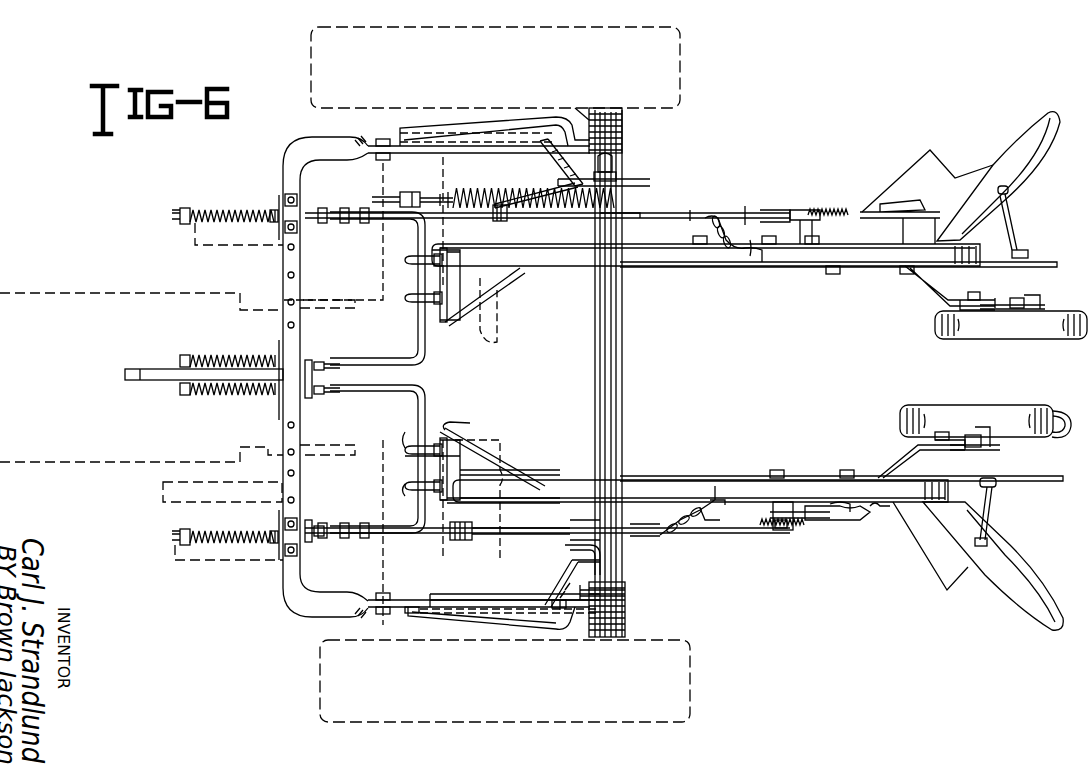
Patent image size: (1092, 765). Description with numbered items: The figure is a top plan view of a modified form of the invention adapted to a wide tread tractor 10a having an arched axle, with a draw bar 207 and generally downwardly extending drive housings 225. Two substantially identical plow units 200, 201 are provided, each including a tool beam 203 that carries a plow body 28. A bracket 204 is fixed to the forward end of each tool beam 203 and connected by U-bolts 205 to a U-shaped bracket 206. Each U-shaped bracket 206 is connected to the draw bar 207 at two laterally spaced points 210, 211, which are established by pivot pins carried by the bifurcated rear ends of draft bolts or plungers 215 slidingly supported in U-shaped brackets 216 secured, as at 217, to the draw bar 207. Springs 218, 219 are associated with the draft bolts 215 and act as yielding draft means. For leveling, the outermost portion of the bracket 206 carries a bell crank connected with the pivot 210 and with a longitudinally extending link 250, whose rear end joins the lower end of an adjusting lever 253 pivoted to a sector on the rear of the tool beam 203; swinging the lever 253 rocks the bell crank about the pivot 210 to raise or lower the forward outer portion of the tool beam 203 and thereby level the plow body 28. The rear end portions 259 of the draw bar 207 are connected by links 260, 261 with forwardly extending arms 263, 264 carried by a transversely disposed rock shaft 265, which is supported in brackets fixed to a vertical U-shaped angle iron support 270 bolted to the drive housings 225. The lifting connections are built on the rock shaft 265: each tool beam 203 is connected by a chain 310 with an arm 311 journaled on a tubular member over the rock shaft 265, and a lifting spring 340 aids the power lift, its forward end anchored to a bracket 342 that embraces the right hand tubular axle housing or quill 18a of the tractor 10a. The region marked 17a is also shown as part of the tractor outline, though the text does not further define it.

The tractor 10a is at (58, 300).
The lower hitch outline 17a is at (395, 562).
The tubular axle housing or quill 18a is at (400, 248).
The plow body 28 is at (888, 192).
The plow unit 200 is at (1015, 226).
The plow unit 201 is at (1007, 522).
The tool beam 203 is at (665, 266).
The bracket 204 is at (495, 435).
The U-bolts 205 is at (412, 455).
The U-shaped bracket 206 is at (424, 330).
The draw bar 207 is at (290, 170).
The laterally spaced connection point 210 is at (314, 545).
The laterally spaced connection point 211 is at (315, 400).
The draft bolt or plunger 215 is at (176, 390).
The U-shaped bracket 216 is at (275, 546).
The securing means 217 is at (284, 222).
The spring 218 is at (192, 208).
The spring 219 is at (214, 362).
The drive housing 225 is at (372, 126).
The link 250 is at (452, 540).
The adjusting lever 253 is at (850, 202).
The rear end portion of draw bar 259 is at (505, 600).
The link 260 is at (570, 570).
The link 261 is at (552, 172).
The forwardly extending arm 263 is at (625, 594).
The forwardly extending arm 264 is at (612, 158).
The rock shaft 265 is at (618, 562).
The U-shaped angle iron support 270 is at (622, 378).
The chain 310 is at (745, 255).
The arm 311 is at (705, 210).
The lifting spring 340 is at (470, 186).
The bracket 342 is at (376, 199).